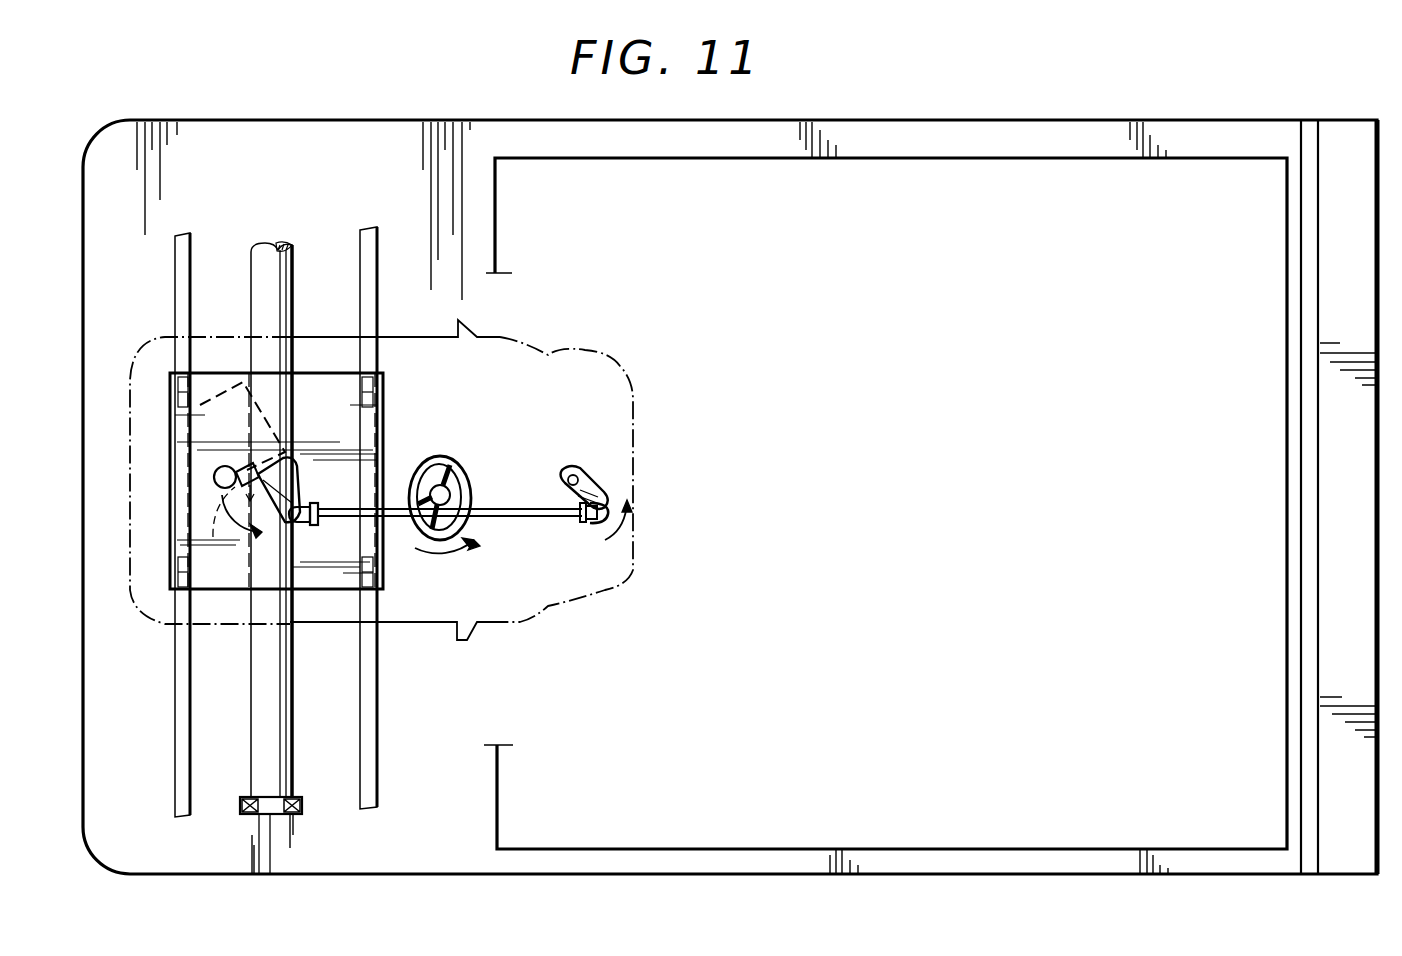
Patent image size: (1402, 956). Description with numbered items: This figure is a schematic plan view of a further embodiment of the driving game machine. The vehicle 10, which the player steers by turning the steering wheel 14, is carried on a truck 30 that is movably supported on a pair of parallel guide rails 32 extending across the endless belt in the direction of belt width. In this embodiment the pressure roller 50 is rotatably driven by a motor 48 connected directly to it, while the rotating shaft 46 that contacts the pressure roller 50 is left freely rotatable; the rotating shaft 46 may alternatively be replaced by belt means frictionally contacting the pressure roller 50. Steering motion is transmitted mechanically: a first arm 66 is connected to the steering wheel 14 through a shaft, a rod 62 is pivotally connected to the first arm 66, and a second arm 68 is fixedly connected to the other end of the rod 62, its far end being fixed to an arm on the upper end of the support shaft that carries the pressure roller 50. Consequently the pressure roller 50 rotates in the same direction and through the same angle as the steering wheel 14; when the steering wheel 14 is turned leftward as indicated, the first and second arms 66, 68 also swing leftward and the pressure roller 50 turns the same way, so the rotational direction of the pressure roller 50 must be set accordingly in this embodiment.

The vehicle 10 is at (633, 428).
The steering wheel 14 is at (457, 467).
The truck 30 is at (323, 393).
The guide rails 32 is at (185, 270).
The rotating shaft 46 is at (295, 268).
The motor 48 is at (225, 432).
The pressure roller 50 is at (235, 497).
The rod 62 is at (555, 517).
The first arm 66 is at (590, 487).
The second arm 68 is at (293, 488).